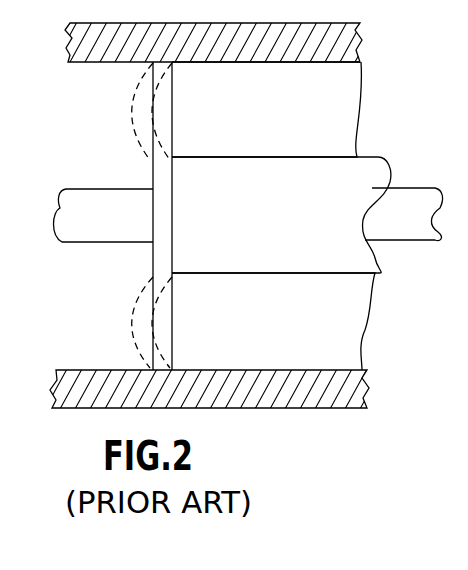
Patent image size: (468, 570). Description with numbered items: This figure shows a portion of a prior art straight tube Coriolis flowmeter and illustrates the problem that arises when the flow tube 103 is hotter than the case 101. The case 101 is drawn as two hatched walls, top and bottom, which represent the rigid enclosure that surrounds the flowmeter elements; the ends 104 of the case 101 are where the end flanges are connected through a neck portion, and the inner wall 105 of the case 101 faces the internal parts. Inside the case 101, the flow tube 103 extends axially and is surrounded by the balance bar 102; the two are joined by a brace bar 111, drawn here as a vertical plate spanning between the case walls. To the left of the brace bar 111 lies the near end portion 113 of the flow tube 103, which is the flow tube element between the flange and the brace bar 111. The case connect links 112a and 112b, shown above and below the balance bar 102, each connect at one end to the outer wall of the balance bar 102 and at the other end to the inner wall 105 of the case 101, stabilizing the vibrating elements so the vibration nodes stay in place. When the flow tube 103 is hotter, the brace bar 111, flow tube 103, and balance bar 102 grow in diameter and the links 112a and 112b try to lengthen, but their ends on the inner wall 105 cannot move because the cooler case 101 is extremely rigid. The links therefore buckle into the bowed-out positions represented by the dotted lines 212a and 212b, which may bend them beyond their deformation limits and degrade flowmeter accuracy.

The case 101 is at (357, 30).
The ends of case 104 is at (249, 382).
The inner wall of case 105 is at (233, 62).
The balance bar 102 is at (305, 242).
The flow tube 103 is at (417, 230).
The brace bar 111 is at (173, 183).
The case connect link 112a is at (172, 110).
The case connect link 112b is at (172, 327).
The near end portion of flow tube 113 is at (132, 203).
The dotted line (bowed out position of case connect link) 212a is at (136, 128).
The dotted line (bowed out position of case connect link) 212b is at (133, 310).